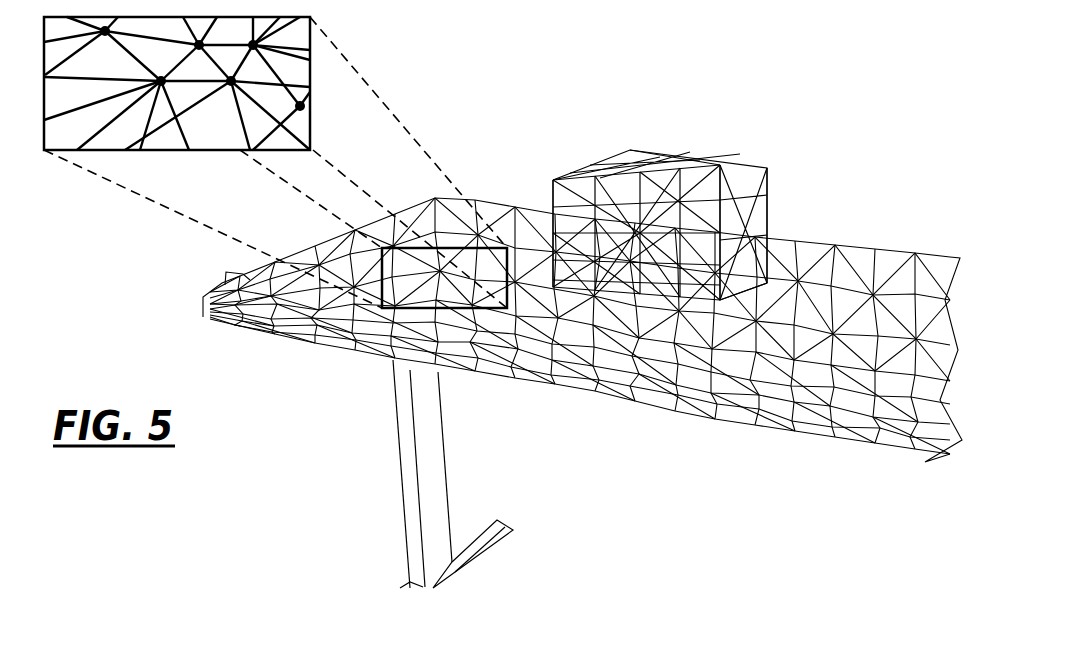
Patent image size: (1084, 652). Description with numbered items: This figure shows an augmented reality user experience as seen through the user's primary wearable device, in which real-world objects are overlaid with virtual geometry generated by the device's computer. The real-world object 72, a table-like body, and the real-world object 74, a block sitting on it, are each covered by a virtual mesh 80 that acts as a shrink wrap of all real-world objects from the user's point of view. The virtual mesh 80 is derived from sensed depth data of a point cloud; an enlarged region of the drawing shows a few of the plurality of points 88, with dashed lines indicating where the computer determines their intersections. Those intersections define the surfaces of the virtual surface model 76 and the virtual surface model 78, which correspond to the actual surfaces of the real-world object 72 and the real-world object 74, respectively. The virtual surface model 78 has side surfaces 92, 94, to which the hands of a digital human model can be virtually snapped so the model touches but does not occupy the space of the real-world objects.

The real-world object 72 is at (582, 334).
The real-world object 74 is at (689, 193).
The virtual surface model 76 is at (840, 267).
The virtual surface model 78 is at (657, 150).
The virtual mesh 80 is at (690, 432).
The points 88 is at (300, 106).
The side surface 92 is at (553, 186).
The side surface 94 is at (720, 220).